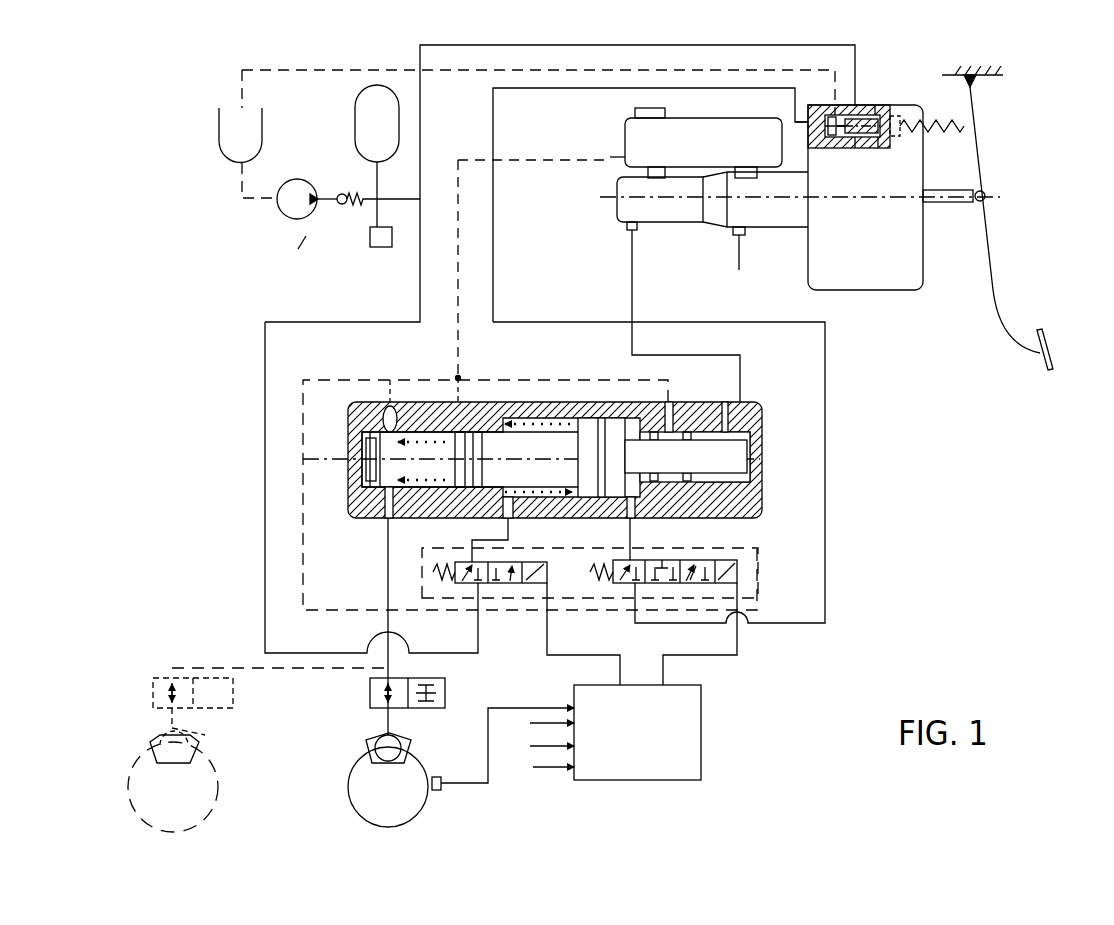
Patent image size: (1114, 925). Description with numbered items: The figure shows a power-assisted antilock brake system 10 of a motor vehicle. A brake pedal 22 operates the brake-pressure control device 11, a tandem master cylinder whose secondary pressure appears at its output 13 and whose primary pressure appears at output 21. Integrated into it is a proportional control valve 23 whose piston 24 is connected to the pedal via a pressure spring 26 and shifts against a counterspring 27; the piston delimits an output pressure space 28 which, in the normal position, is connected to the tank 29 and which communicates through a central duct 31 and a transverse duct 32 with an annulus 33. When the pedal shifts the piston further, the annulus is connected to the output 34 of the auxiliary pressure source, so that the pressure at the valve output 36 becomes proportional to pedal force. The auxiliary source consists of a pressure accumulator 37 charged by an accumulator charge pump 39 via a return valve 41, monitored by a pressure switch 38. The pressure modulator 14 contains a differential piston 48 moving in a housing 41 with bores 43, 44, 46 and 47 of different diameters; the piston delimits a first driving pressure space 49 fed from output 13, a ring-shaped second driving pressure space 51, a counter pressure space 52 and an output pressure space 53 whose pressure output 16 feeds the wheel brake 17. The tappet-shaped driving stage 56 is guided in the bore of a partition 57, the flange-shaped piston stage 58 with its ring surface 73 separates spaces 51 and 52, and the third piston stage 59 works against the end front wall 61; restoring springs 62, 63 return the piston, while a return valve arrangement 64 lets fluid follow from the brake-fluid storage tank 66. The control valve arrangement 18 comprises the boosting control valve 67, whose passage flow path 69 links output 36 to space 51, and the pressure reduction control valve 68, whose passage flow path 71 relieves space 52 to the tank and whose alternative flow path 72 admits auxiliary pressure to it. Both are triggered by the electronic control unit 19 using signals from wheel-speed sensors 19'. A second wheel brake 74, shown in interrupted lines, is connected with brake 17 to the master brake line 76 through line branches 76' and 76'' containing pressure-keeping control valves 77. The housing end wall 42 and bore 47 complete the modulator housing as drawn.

The brake system 10 is at (1033, 108).
The brake pressure control device 11 is at (785, 230).
The first pressure output 13 is at (632, 260).
The pressure modulator 14 is at (552, 385).
The pressure output 16 is at (385, 525).
The wheel brake 17 is at (366, 752).
The control valve arrangement 18 is at (607, 601).
The electronic control unit 19 is at (636, 732).
The wheel-speed sensors 19' is at (503, 767).
The pressure output 21 is at (735, 250).
The brake pedal 22 is at (995, 290).
The proportional control valve 23 is at (865, 107).
The piston 24 is at (855, 118).
The pressure spring 26 is at (930, 120).
The counterspring 27 is at (828, 117).
The output pressure space 28 is at (830, 140).
The tank 29 is at (250, 140).
The central duct 31 is at (858, 142).
The transverse duct 32 is at (880, 140).
The annulus 33 is at (878, 110).
The output of the auxiliary pressure source 34 is at (424, 199).
The output of the proportional control valve 36 is at (815, 136).
The pressure accumulator 37 is at (365, 108).
The pressure switch 38 is at (370, 237).
The accumulator charge pump 39 is at (300, 185).
The return valve / modulator housing 41 is at (350, 190).
The cylinder housing 42 is at (762, 459).
The outer bore stage 43 is at (445, 425).
The central bore stage 44 is at (478, 425).
The central bore 46 is at (688, 440).
The bore 47 is at (718, 432).
The differential piston 48 is at (555, 492).
The first driving pressure space 49 is at (762, 495).
The second ring-shaped driving pressure space 51 is at (628, 425).
The counter pressure space 52 is at (515, 420).
The output pressure space 53 is at (418, 497).
The tappet-shaped driving stage 56 is at (720, 482).
The partition 57 is at (665, 497).
The flange-shaped piston stage 58 is at (612, 430).
The third piston stage 59 is at (500, 497).
The end front wall 61 is at (362, 445).
The restoring spring 62 is at (410, 440).
The restoring spring 63 is at (585, 440).
The return valve arrangement 64 is at (388, 405).
The brake-fluid storage tank 66 is at (760, 122).
The boosting control valve 67 is at (665, 588).
The pressure reduction control valve 68 is at (510, 585).
The passage flow path 69 is at (630, 577).
The passage flow path 71 is at (462, 585).
The alternative flow-through flow path 72 is at (547, 600).
The ring surface 73 is at (580, 495).
The wheel brake 74 is at (150, 748).
The master brake line 76 is at (370, 630).
The line branch 76' is at (363, 735).
The line branch 76'' is at (270, 706).
The pressure-keeping control valve 77 is at (370, 692).